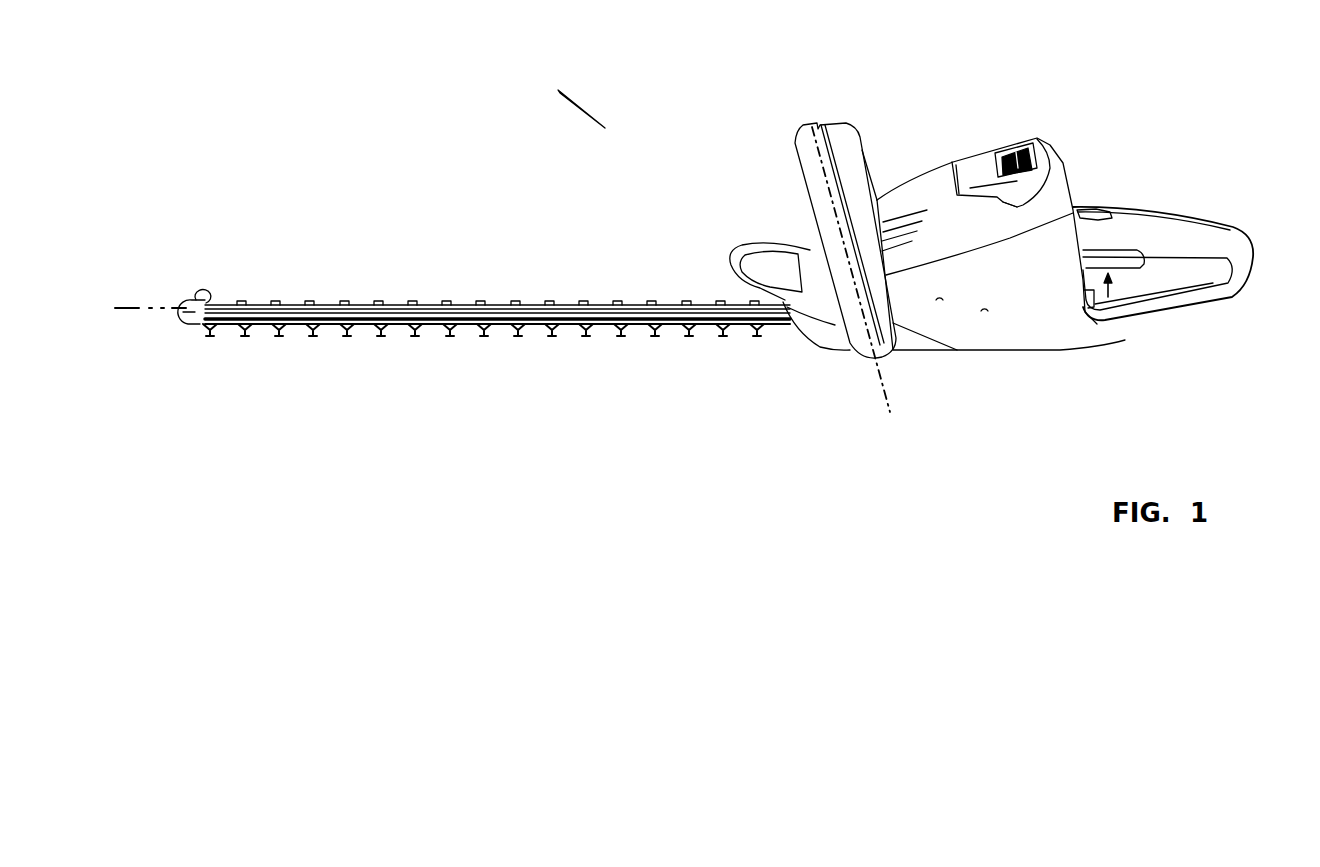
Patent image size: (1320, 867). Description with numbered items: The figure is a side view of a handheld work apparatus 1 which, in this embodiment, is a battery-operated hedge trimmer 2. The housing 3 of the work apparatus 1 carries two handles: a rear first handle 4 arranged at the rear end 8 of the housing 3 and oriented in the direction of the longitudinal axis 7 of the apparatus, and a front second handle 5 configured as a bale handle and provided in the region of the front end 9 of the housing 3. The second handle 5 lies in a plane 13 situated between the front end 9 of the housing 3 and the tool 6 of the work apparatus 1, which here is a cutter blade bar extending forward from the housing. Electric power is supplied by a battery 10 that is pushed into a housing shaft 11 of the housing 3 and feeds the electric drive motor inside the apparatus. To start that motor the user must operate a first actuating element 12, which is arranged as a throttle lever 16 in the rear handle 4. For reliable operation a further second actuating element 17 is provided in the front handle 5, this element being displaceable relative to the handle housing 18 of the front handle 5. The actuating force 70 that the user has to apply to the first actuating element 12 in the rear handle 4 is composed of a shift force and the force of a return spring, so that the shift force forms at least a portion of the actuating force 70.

The handheld work apparatus 1 is at (658, 157).
The hedge trimmer 2 is at (1058, 156).
The housing 3 is at (935, 172).
The rear first handle 4 is at (1193, 212).
The front second handle 5 is at (797, 132).
The tool 6 is at (447, 303).
The longitudinal axis 7 is at (127, 308).
The rear end 8 is at (1091, 300).
The front end 9 is at (876, 198).
The battery 10 is at (986, 166).
The housing shaft 11 is at (1023, 208).
The first actuating element 12 is at (1120, 258).
The plane 13 is at (882, 388).
The throttle lever 16 is at (1153, 270).
The second actuating element 17 is at (838, 132).
The handle housing 18 is at (807, 201).
The actuating force 70 is at (1113, 291).